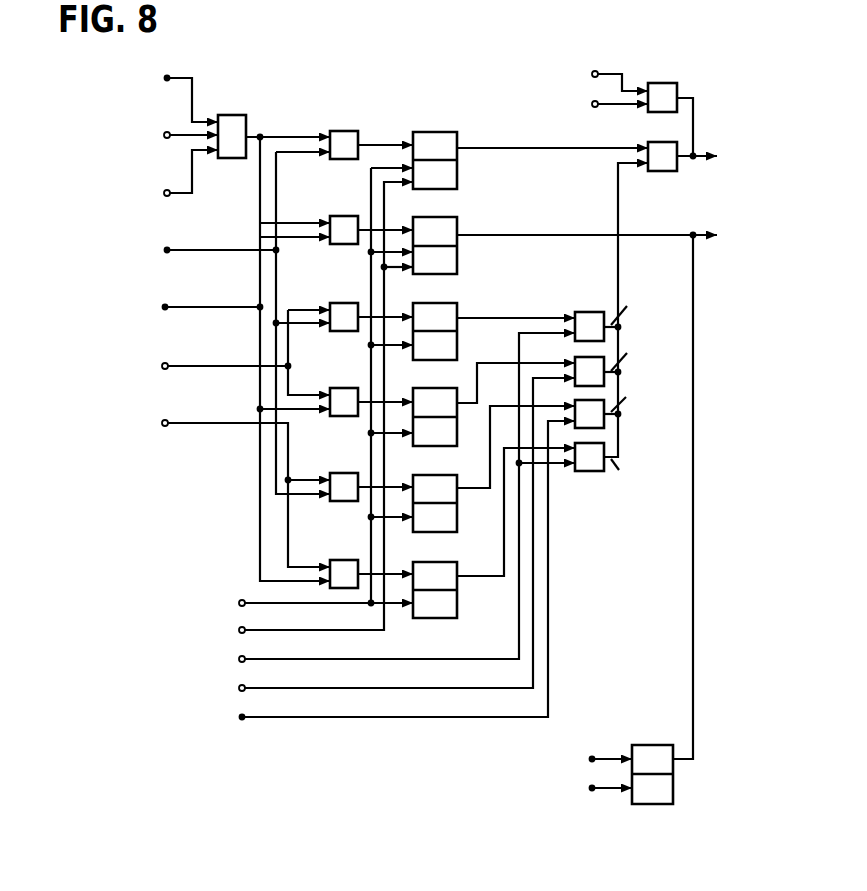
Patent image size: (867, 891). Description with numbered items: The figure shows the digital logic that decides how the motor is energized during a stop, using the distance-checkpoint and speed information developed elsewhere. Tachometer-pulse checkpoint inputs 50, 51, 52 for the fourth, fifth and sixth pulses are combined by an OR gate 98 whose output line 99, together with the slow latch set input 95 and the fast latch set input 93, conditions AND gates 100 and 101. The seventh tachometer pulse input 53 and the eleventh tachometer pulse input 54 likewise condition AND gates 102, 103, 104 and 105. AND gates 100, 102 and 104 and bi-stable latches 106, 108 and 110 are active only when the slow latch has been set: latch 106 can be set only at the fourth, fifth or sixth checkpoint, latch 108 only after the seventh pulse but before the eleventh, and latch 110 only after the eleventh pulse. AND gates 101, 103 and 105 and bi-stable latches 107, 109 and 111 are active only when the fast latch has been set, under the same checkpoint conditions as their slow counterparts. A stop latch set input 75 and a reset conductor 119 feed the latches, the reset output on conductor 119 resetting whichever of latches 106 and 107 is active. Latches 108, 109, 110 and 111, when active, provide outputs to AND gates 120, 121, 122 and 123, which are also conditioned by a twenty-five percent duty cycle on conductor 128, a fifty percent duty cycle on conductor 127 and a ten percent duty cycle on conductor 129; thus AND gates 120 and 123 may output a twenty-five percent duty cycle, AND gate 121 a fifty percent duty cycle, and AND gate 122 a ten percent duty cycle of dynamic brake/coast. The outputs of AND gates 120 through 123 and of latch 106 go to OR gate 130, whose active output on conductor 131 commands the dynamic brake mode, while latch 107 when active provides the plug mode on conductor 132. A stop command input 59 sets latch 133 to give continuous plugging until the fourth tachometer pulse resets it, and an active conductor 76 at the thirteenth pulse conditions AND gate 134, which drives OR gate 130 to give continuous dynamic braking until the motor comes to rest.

The 4th tach pulse input 50 is at (184, 77).
The 5th tach pulse input 51 is at (193, 133).
The 6th tach pulse input 52 is at (193, 186).
The OR gate 98 is at (236, 115).
The OR gate output line 99 is at (252, 133).
The slow latch set input 95 is at (193, 250).
The fast latch set input 93 is at (190, 307).
The 7th tach pulse input 53 is at (190, 366).
The 11th tach pulse input 54 is at (190, 423).
The AND gate 100 is at (342, 131).
The AND gate 101 is at (351, 216).
The AND gate 102 is at (348, 303).
The AND gate 103 is at (350, 388).
The AND gate 104 is at (345, 473).
The AND gate 105 is at (344, 560).
The bi-stable latch 106 is at (457, 171).
The bi-stable latch 107 is at (457, 258).
The bi-stable latch 108 is at (457, 343).
The bi-stable latch 109 is at (457, 432).
The bi-stable latch 110 is at (456, 527).
The bi-stable latch 111 is at (457, 612).
The stop latch set input 75 is at (272, 603).
The conductor 119 is at (272, 630).
The conductor 128 is at (272, 659).
The conductor 127 is at (272, 688).
The conductor 129 is at (272, 717).
The AND gate 120 is at (586, 312).
The AND gate 121 is at (578, 357).
The AND gate 122 is at (605, 422).
The AND gate 123 is at (589, 471).
The conductor 76 is at (611, 74).
The stop command input 59 is at (632, 108).
The AND gate 134 is at (665, 83).
The OR gate 130 is at (663, 171).
The conductor 131 is at (700, 154).
The conductor 132 is at (696, 240).
The latch 133 is at (673, 790).